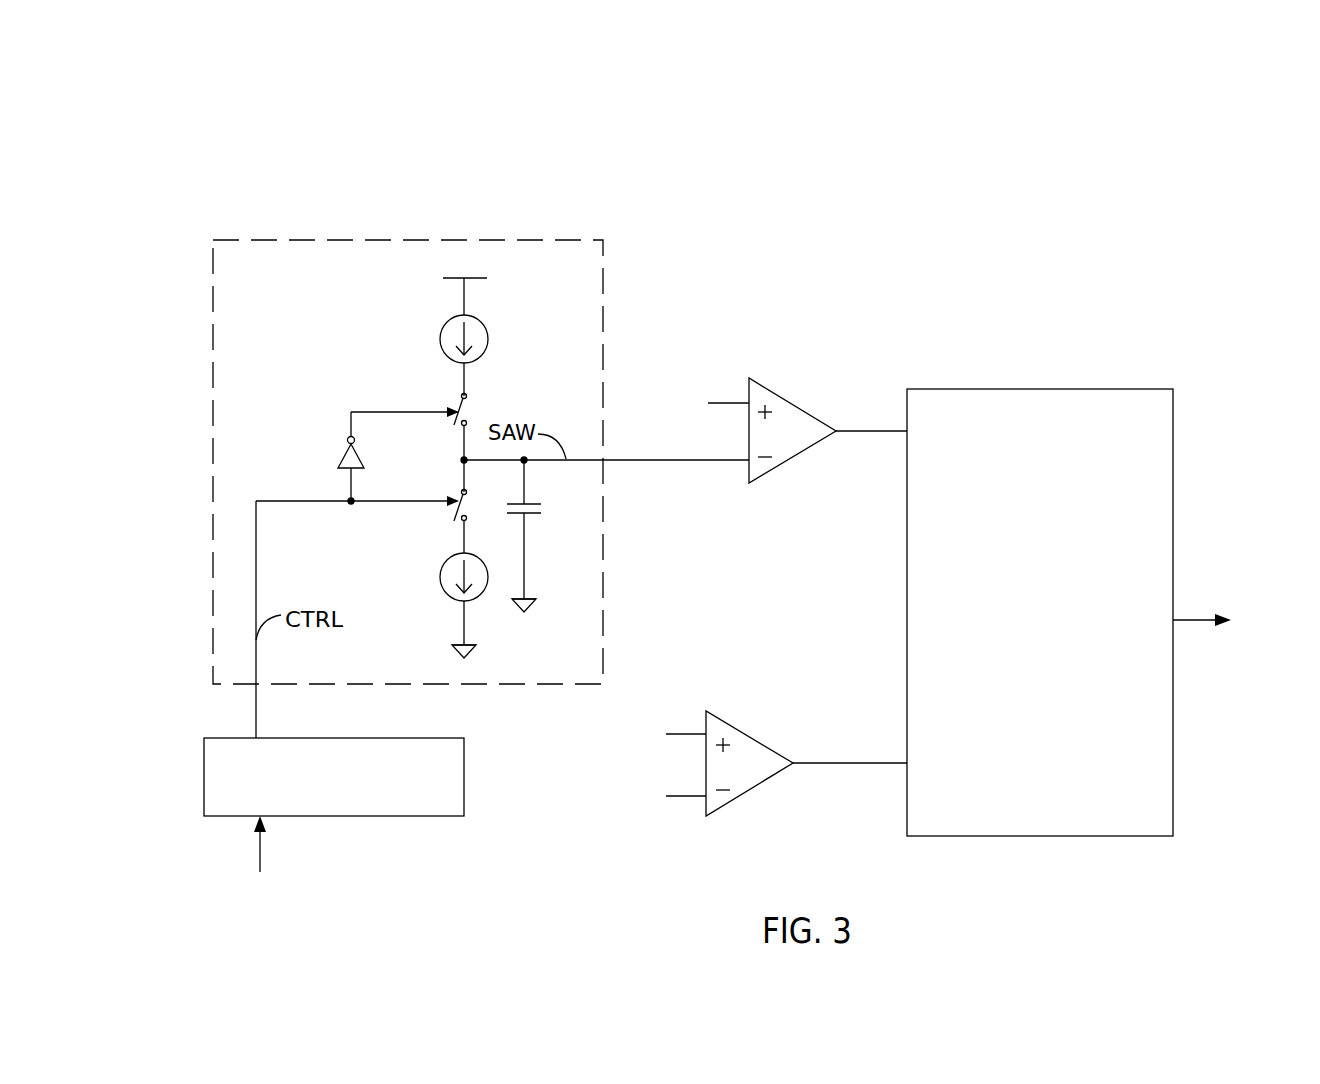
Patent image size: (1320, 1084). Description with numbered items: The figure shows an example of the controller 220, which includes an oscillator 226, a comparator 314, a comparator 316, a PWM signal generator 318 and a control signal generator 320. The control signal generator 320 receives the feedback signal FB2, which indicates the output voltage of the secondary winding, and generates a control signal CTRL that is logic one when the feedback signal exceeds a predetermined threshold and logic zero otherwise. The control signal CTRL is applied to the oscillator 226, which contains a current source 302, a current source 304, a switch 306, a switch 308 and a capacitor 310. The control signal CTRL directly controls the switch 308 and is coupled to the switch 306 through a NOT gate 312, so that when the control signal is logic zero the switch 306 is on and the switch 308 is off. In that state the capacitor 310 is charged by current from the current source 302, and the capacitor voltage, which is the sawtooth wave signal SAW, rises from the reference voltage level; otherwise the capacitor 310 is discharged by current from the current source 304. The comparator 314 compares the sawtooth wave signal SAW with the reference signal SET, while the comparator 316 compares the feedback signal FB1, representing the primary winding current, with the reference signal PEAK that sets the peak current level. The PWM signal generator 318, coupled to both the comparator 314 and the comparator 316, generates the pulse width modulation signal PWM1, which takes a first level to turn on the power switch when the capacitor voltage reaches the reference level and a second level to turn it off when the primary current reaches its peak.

The controller 220 is at (243, 139).
The oscillator 226 is at (350, 238).
The current source 302 is at (442, 340).
The current source 304 is at (445, 570).
The switch 306 is at (460, 405).
The switch 308 is at (460, 492).
The capacitor 310 is at (533, 515).
The NOT gate 312 is at (341, 456).
The comparator 314 is at (791, 402).
The comparator 316 is at (742, 731).
The PWM signal generator 318 is at (1051, 388).
The control signal generator 320 is at (413, 816).